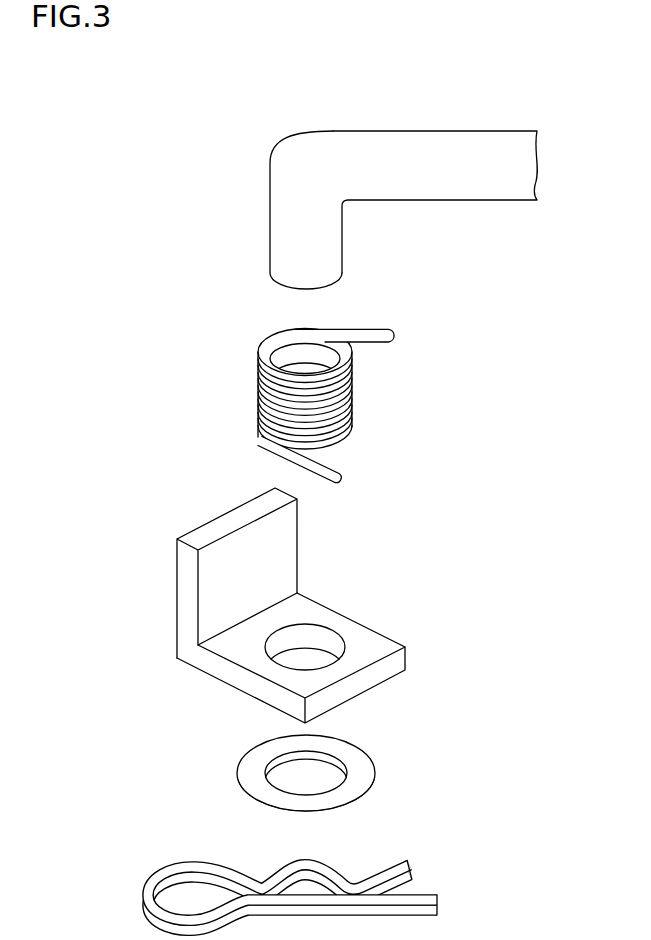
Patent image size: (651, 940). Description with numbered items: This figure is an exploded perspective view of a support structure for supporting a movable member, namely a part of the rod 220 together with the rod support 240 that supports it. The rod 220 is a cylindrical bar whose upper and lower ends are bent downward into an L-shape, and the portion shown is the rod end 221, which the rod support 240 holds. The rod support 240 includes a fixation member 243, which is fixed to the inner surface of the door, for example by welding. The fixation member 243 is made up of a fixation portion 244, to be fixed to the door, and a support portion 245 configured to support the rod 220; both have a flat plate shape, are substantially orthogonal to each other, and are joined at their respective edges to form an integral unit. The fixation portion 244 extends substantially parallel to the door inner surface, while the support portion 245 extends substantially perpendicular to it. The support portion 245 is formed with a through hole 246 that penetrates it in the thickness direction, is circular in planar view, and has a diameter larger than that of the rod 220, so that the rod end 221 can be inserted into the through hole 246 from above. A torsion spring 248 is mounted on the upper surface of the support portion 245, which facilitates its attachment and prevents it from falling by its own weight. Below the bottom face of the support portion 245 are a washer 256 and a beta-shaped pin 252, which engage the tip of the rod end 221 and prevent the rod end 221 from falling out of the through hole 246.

The rod 220 is at (371, 173).
The rod end 221 is at (298, 250).
The rod support 240 is at (532, 372).
The torsion spring 248 is at (354, 395).
The fixation member 243 is at (356, 598).
The fixation portion 244 is at (242, 563).
The support portion 245 is at (291, 645).
The through hole 246 is at (320, 642).
The washer 256 is at (376, 773).
The beta-shaped pin 252 is at (432, 888).